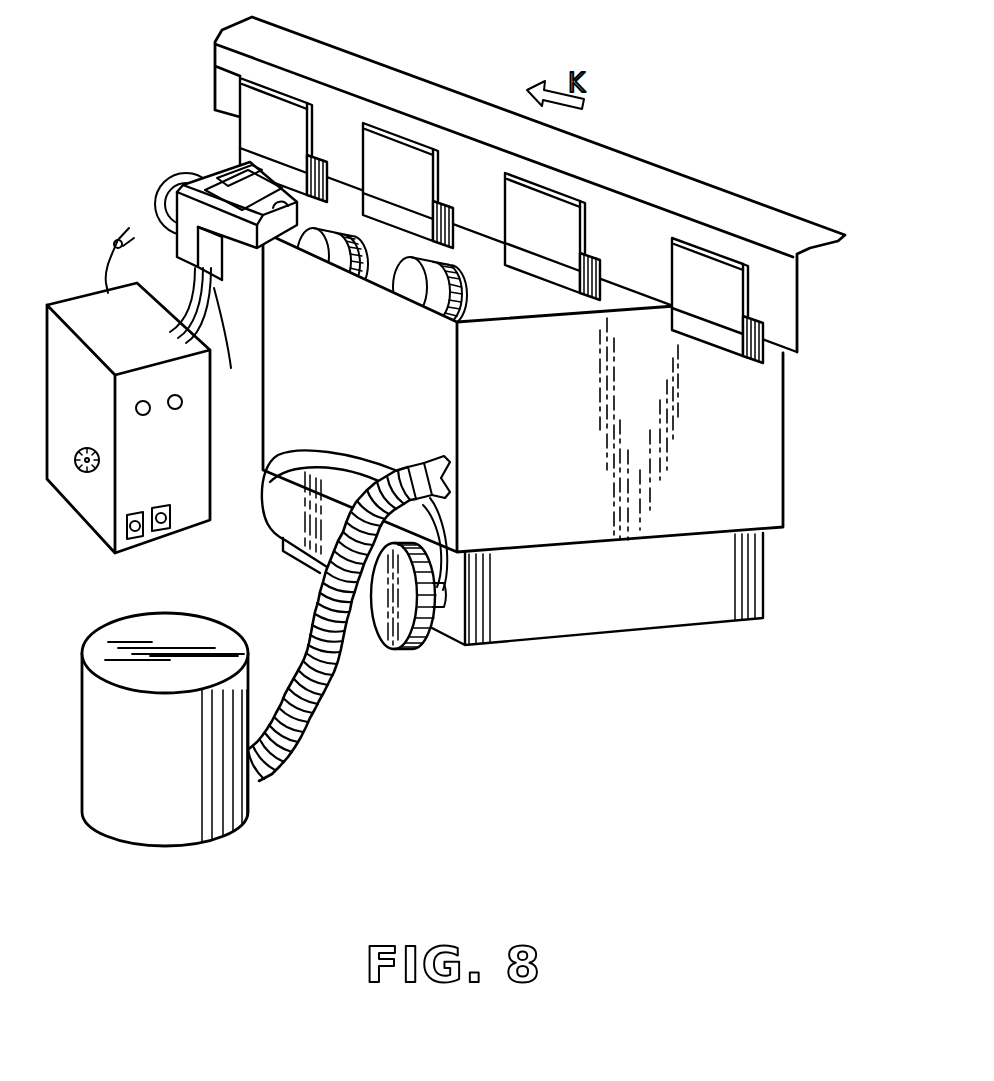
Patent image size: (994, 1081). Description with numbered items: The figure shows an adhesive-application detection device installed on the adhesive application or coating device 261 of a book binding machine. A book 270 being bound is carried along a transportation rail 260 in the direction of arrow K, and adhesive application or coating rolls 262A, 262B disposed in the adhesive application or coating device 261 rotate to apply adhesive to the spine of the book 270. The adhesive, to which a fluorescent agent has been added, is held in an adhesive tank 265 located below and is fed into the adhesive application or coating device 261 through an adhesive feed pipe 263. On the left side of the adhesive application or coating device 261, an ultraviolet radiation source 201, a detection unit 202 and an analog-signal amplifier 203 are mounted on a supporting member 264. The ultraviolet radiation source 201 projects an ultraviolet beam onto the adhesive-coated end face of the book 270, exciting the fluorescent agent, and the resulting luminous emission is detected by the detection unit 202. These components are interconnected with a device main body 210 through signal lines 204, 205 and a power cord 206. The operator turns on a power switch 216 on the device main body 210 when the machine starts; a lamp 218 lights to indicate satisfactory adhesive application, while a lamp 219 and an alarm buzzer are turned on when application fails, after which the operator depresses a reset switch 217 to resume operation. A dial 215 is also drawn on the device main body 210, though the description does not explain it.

The ultraviolet radiation source 201 is at (340, 182).
The transportation rail 260 is at (222, 110).
The book 270 is at (247, 145).
The detection unit 202 is at (233, 177).
The analog-signal amplifier 203 is at (183, 238).
The supporting member 264 is at (153, 193).
The signal line 204 is at (157, 207).
The device main body 210 is at (90, 290).
The signal line 205 is at (187, 295).
The power cord 206 is at (232, 368).
The adhesive application roll 262A is at (377, 267).
The adhesive application roll 262B is at (509, 302).
The adhesive application or coating device 261 is at (773, 465).
The dial 215 is at (80, 473).
The lamp 218 is at (143, 415).
The lamp 219 is at (182, 405).
The power switch 216 is at (134, 540).
The reset switch 217 is at (163, 532).
The adhesive feed pipe 263 is at (320, 592).
The adhesive tank 265 is at (168, 840).